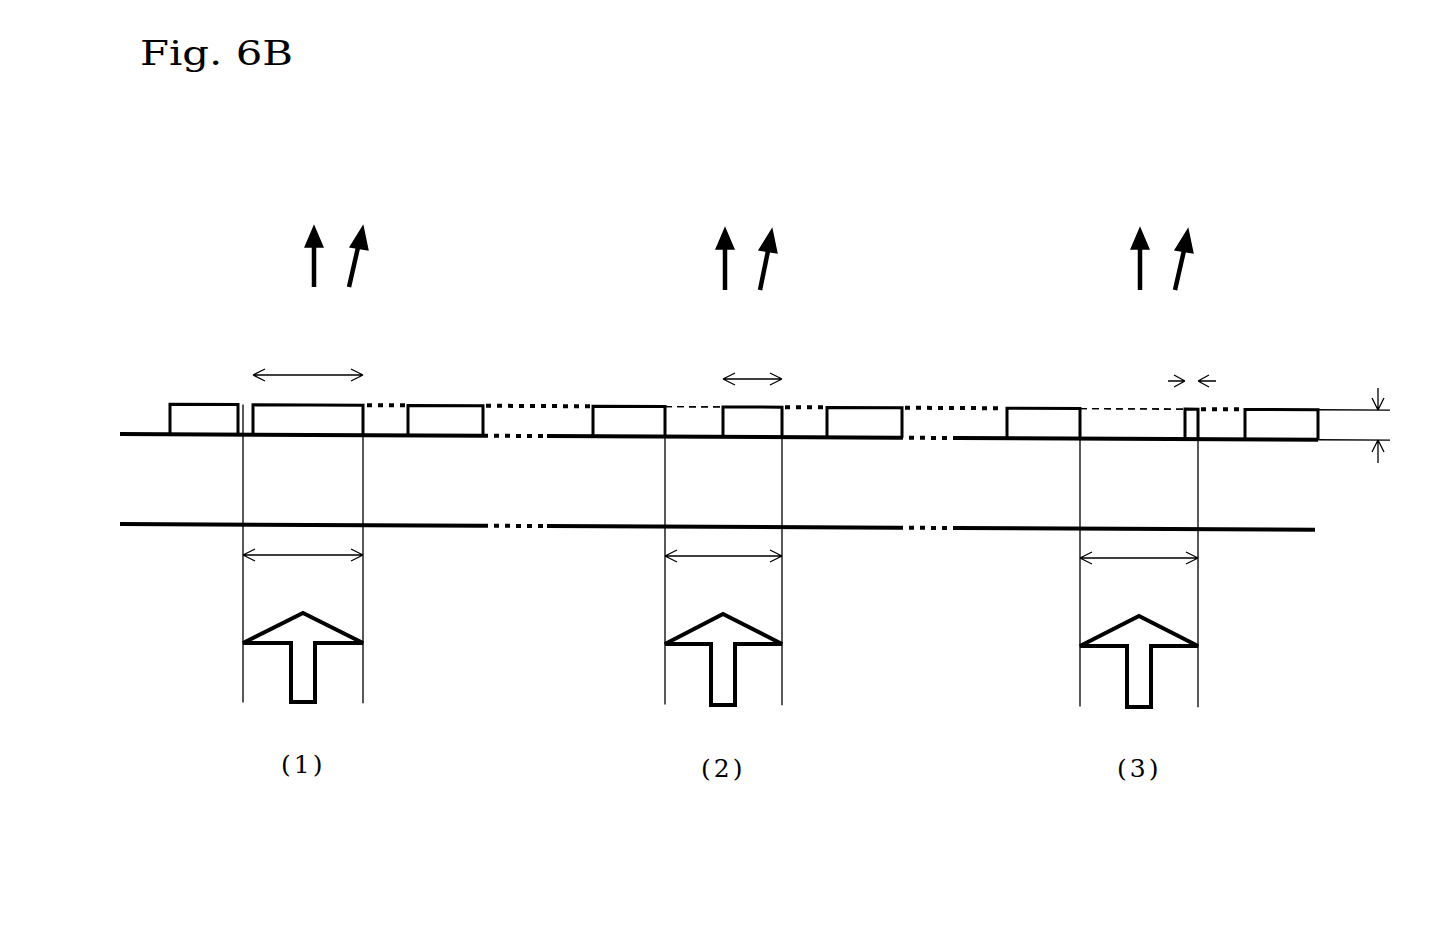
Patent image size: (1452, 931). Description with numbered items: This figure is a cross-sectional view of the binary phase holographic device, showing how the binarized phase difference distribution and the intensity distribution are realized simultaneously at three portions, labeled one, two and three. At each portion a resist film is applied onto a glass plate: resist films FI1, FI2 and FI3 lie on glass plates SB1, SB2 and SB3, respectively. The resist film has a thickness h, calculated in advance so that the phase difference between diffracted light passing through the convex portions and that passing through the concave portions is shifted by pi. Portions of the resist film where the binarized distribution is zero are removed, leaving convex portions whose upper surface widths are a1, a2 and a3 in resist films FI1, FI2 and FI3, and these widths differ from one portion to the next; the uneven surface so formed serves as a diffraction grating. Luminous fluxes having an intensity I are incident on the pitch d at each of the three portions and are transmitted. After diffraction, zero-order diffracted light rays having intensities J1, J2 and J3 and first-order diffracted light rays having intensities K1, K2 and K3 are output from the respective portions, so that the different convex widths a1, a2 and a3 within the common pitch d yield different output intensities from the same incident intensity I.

The resist film FI1 is at (315, 403).
The resist film FI2 is at (755, 419).
The resist film FI3 is at (1197, 420).
The glass plate SB1 is at (302, 463).
The glass plate SB2 is at (723, 467).
The glass plate SB3 is at (1140, 468).
The zero-order diffracted light intensity J1 is at (311, 258).
The zero-order diffracted light intensity J2 is at (722, 261).
The zero-order diffracted light intensity J3 is at (1137, 261).
The first-order diffracted light intensity K1 is at (356, 260).
The first-order diffracted light intensity K2 is at (766, 262).
The first-order diffracted light intensity K3 is at (1181, 264).
The upper surface width of convex portion a1 is at (290, 374).
The upper surface width of convex portion a2 is at (769, 354).
The upper surface width of convex portion a3 is at (1196, 354).
The pitch d is at (303, 557).
The incident luminous flux intensity I is at (306, 657).
The resist film thickness h is at (1378, 431).